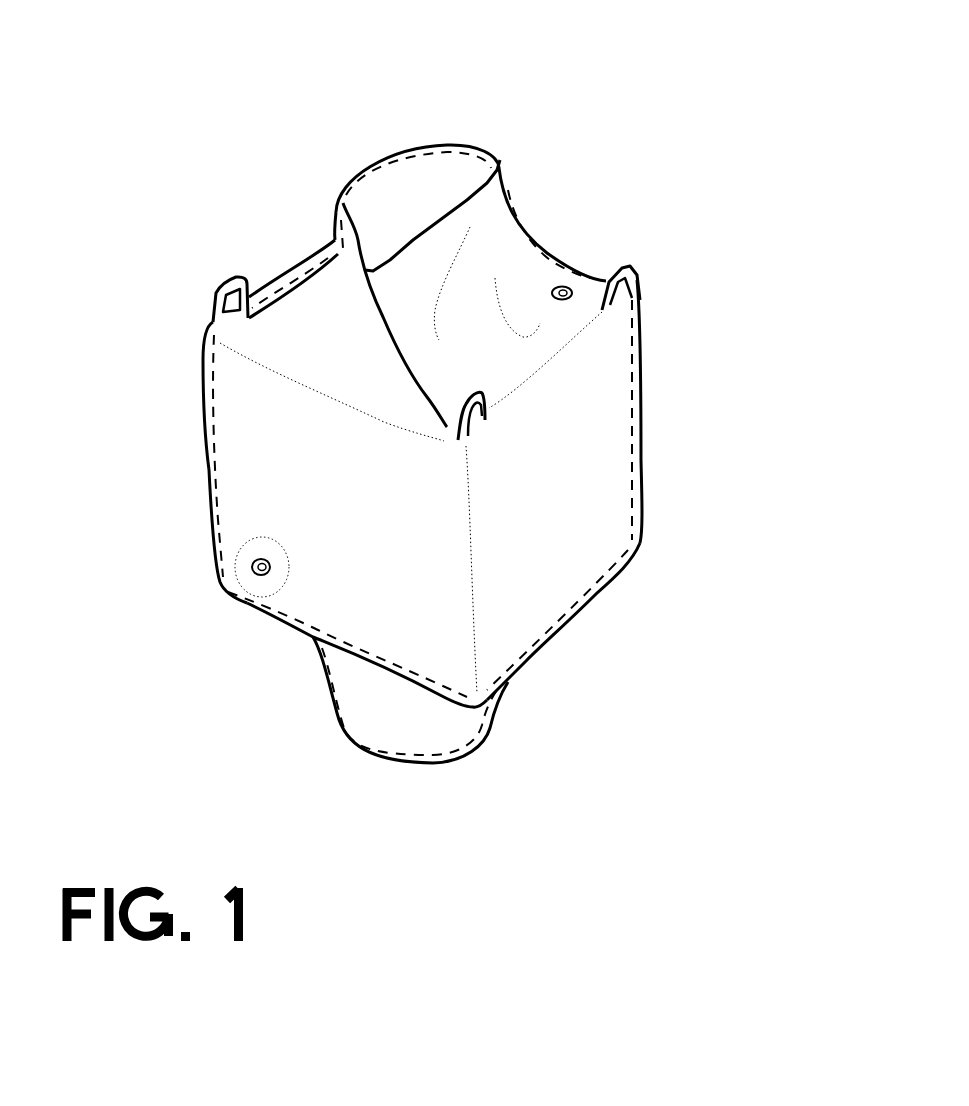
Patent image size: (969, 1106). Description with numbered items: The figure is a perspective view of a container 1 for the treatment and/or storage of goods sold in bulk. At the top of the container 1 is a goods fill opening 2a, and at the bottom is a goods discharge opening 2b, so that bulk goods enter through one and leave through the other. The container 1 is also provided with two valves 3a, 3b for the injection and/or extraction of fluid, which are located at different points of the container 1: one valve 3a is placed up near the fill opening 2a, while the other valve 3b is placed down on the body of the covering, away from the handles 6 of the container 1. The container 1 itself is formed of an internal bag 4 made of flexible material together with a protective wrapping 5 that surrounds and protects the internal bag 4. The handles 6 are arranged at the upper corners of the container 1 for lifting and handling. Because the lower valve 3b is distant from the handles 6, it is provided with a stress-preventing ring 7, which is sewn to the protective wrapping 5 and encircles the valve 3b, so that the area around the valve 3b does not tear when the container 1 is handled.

The container 1 is at (270, 192).
The goods fill opening 2a is at (500, 150).
The goods discharge opening 2b is at (465, 753).
The valve 3a is at (567, 283).
The valve 3b is at (258, 582).
The internal bag 4 is at (211, 470).
The protective wrapping 5 is at (563, 633).
The handles 6 is at (213, 297).
The stress-preventing ring 7 is at (222, 583).